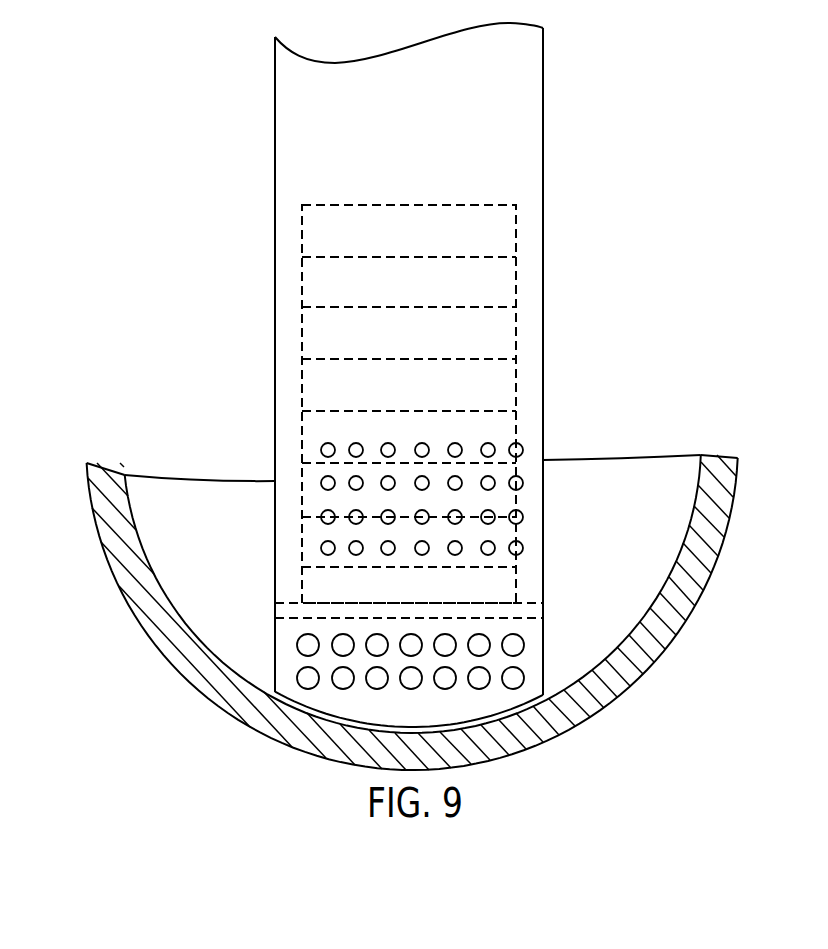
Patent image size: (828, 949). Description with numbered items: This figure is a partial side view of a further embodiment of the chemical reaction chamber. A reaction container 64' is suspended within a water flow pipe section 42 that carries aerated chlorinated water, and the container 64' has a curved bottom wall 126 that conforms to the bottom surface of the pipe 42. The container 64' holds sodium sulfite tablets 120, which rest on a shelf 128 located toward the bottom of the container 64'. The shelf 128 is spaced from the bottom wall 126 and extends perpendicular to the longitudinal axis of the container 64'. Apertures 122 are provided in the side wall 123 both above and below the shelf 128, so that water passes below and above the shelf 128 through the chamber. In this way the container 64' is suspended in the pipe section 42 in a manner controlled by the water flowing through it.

The pipe 42 is at (128, 606).
The chamber 64' is at (440, 375).
The sodium sulfite tablets 120 is at (500, 323).
The apertures 122 is at (523, 448).
The side wall 123 is at (543, 361).
The curved bottom wall 126 is at (510, 722).
The shelf 128 is at (535, 612).